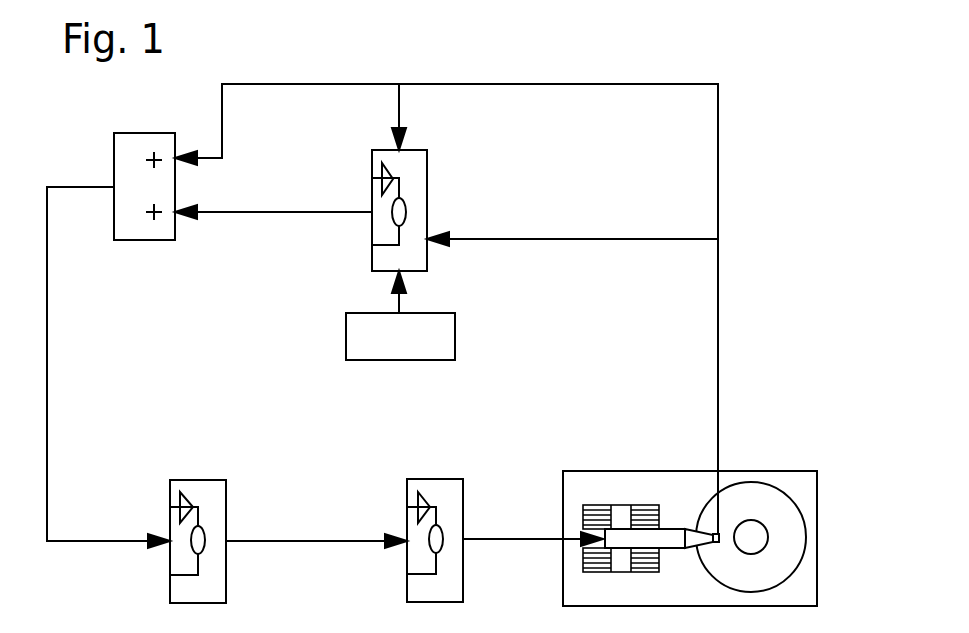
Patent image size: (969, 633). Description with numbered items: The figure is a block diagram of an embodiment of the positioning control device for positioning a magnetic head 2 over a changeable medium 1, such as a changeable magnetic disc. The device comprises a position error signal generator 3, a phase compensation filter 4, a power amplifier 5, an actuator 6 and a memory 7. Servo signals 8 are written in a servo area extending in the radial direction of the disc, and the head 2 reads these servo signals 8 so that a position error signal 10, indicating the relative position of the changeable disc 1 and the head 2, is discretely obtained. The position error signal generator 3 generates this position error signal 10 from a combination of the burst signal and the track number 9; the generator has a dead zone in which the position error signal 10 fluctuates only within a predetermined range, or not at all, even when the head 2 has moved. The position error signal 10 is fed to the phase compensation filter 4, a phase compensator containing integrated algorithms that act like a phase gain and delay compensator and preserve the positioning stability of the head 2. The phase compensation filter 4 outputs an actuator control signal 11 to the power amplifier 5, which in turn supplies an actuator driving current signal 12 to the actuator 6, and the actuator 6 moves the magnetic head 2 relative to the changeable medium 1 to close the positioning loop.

The changeable medium 1 is at (760, 500).
The magnetic head 2 is at (714, 533).
The position error signal generator 3 is at (372, 164).
The phase compensation filter 4 is at (170, 497).
The power amplifier 5 is at (407, 497).
The actuator 6 is at (610, 572).
The memory 7 is at (400, 315).
The servo signals 8 is at (588, 238).
The track number 9 is at (567, 84).
The position error signal 10 is at (273, 213).
The actuator control signal 11 is at (307, 540).
The actuator driving current signal 12 is at (518, 539).